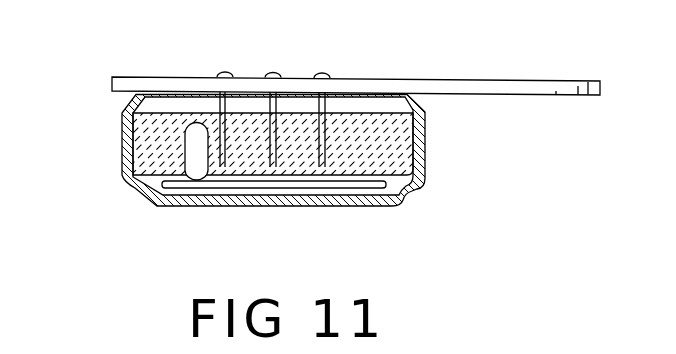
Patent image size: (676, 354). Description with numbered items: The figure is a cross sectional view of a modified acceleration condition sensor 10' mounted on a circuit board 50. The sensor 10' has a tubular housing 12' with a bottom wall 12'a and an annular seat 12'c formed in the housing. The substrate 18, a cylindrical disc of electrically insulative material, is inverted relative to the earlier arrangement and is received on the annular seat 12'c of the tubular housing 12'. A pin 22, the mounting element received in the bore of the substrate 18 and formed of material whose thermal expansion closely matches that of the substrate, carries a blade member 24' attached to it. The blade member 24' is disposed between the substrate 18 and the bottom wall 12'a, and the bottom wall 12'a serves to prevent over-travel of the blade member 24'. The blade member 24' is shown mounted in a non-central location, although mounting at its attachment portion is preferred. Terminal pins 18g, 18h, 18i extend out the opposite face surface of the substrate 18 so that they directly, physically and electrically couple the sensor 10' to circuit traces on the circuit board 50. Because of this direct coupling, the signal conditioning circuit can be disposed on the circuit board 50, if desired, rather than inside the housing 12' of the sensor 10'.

The modified sensor 10' is at (489, 165).
The tubular housing 12' is at (270, 153).
The bottom wall 12'a is at (200, 232).
The annular seat 12'c is at (445, 217).
The substrate 18 is at (148, 138).
The terminal pin 18g is at (218, 96).
The terminal pin 18h is at (282, 110).
The terminal pin 18i is at (330, 100).
The pin 22 is at (195, 130).
The blade member 24' is at (274, 222).
The circuit board 50 is at (490, 80).